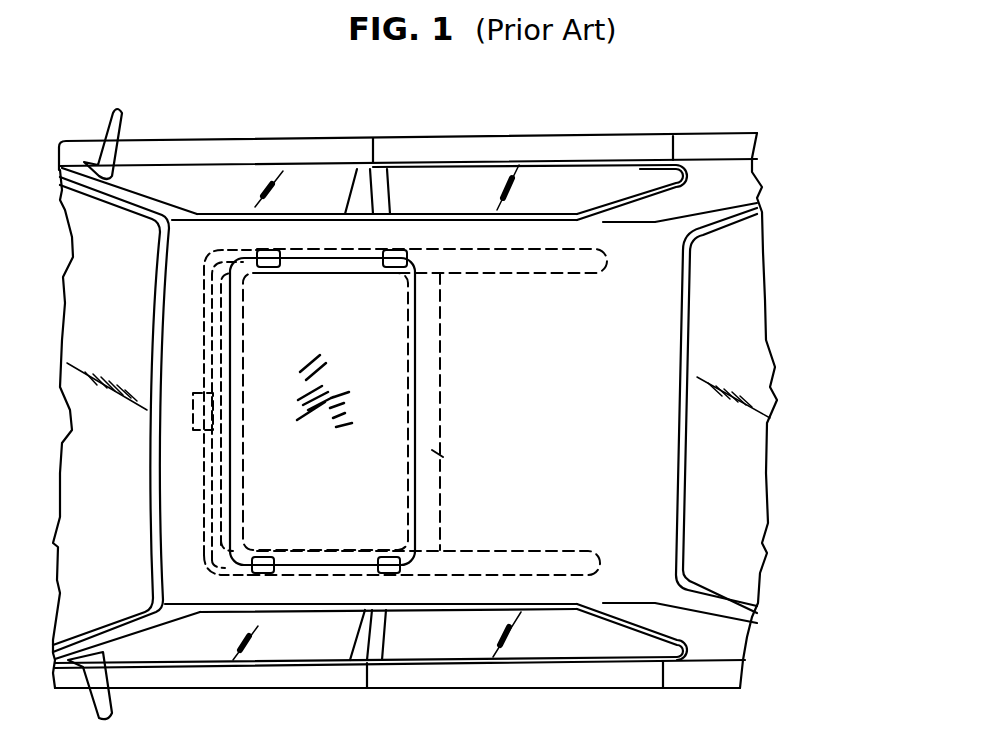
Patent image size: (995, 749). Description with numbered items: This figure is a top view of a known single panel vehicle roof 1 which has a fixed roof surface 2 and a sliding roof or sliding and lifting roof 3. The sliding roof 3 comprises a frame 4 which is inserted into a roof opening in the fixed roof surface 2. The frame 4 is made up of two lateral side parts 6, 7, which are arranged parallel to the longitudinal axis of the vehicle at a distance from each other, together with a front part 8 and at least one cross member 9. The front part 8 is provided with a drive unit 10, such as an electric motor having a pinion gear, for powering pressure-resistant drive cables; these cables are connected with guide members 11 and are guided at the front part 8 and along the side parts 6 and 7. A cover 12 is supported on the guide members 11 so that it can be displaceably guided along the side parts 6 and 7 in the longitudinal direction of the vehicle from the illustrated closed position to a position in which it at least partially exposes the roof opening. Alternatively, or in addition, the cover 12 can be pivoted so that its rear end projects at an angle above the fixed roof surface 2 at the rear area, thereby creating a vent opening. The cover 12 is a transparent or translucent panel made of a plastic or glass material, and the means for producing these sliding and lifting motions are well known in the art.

The vehicle roof 1 is at (606, 130).
The fixed roof surface 2 is at (552, 414).
The sliding roof or sliding and lifting roof 3 is at (331, 258).
The frame 4 is at (447, 228).
The lateral side part 6 is at (503, 257).
The lateral side part 7 is at (517, 572).
The front part 8 is at (223, 480).
The cross member 9 is at (433, 447).
The drive unit 10 is at (213, 420).
The guide members 11 is at (267, 250).
The cover 12 is at (368, 376).